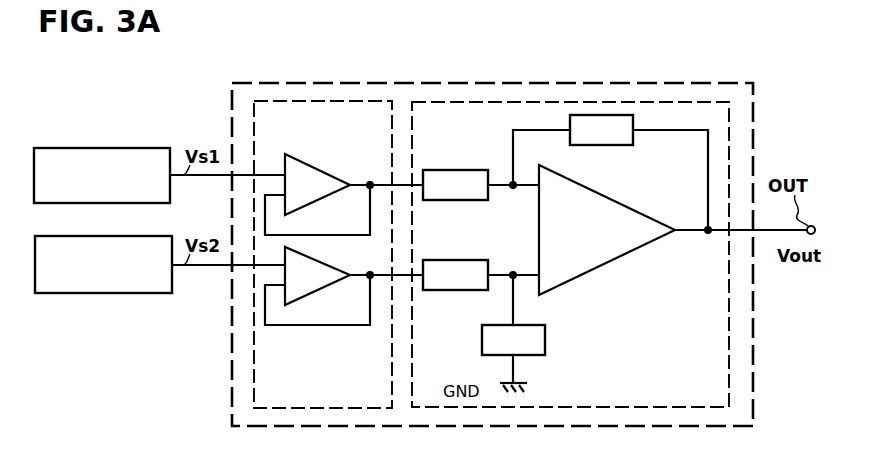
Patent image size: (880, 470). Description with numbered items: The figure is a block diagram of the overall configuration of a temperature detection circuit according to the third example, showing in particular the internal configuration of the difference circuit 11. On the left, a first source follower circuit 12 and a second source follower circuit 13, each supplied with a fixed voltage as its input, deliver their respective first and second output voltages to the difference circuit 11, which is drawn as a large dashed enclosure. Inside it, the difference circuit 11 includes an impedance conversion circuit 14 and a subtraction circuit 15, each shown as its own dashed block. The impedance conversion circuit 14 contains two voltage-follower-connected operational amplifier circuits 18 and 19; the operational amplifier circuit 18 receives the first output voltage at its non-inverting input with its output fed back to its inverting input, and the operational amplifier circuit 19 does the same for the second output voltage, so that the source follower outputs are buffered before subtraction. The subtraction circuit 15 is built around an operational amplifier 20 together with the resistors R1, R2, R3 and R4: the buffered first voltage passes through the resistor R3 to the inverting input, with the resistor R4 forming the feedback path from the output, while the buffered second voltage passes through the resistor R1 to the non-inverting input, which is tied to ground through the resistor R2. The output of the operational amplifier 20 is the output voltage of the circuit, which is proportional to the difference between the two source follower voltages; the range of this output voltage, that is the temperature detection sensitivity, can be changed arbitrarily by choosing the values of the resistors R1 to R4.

The difference circuit 11 is at (422, 83).
The first source follower circuit 12 is at (78, 148).
The second source follower circuit 13 is at (150, 236).
The impedance conversion circuit 14 is at (292, 101).
The subtraction circuit 15 is at (530, 102).
The operational amplifier circuit 18 is at (314, 161).
The operational amplifier circuit 19 is at (325, 261).
The operational amplifier 20 is at (596, 195).
The resistor R1 is at (455, 275).
The resistor R2 is at (513, 340).
The resistor R3 is at (455, 185).
The resistor R4 is at (601, 130).